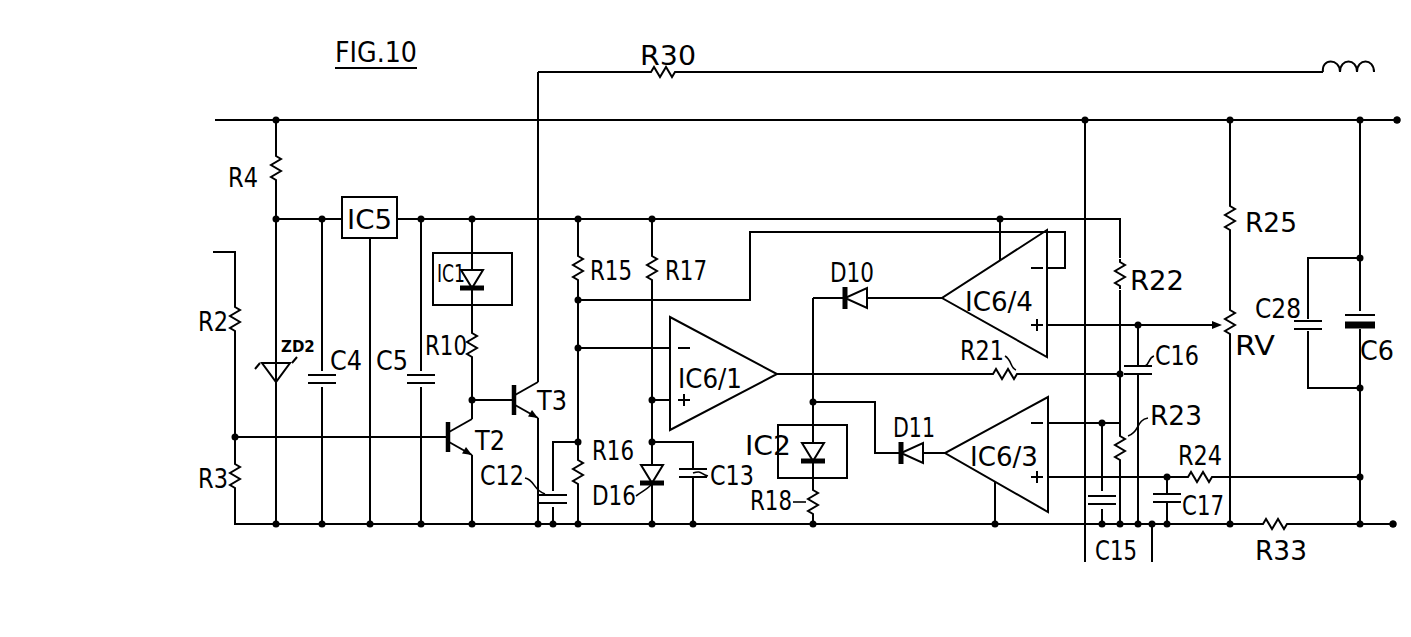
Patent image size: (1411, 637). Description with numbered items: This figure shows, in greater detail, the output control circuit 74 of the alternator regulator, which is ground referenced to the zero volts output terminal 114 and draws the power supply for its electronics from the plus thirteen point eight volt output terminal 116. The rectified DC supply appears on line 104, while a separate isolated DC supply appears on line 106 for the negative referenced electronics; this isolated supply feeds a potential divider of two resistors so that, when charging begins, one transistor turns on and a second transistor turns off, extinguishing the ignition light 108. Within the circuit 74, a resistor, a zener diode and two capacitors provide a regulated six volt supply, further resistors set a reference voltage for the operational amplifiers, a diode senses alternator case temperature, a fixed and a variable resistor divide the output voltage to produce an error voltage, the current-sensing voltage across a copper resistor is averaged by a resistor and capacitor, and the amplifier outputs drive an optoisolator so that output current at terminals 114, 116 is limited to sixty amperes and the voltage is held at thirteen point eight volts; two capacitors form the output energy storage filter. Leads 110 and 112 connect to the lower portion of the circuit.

The output control circuit 74 is at (495, 98).
The line 104 is at (215, 120).
The line 106 is at (213, 252).
The ignition light 108 is at (1323, 72).
The terminal 110 is at (1152, 548).
The terminal 112 is at (1085, 548).
The output terminal 114 is at (1393, 524).
The output terminal 116 is at (1397, 120).